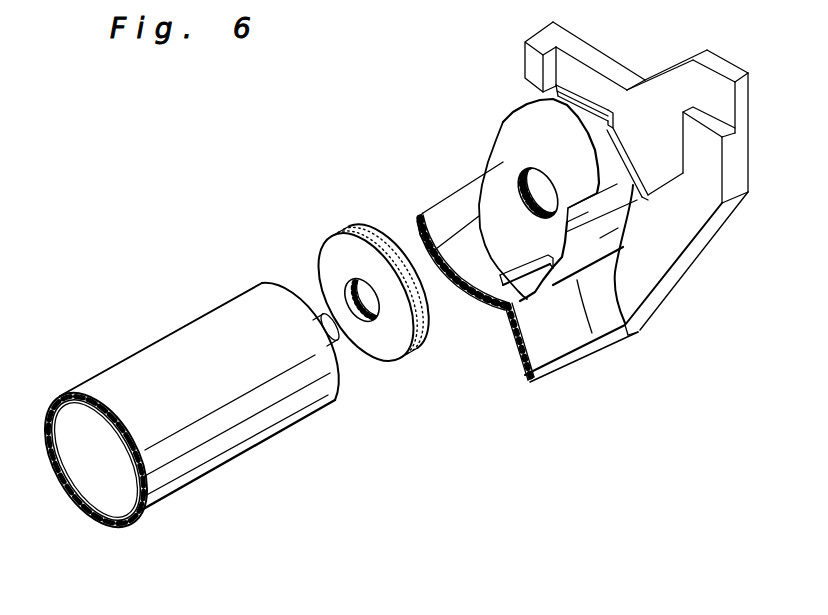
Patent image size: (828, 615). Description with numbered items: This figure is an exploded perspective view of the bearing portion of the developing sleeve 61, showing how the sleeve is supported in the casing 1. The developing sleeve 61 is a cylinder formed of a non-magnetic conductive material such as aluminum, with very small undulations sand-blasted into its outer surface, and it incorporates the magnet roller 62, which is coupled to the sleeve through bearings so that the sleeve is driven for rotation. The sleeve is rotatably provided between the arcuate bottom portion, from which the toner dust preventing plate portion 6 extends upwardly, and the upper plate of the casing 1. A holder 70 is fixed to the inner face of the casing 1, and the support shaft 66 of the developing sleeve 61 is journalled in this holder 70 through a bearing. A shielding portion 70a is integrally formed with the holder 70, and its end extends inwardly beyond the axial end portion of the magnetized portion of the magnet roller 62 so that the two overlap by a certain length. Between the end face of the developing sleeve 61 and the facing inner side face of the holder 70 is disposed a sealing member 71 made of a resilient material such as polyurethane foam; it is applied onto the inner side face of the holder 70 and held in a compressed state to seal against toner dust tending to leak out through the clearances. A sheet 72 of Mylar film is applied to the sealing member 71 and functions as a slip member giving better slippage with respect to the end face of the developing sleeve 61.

The casing 1 is at (636, 225).
The toner dust preventing plate portion 6 is at (466, 231).
The developing sleeve 61 is at (248, 430).
The magnet roller 62 is at (95, 492).
The support shaft 66 is at (273, 263).
The holder 70 is at (553, 215).
The shielding portion 70a is at (493, 356).
The sealing member 71 is at (380, 235).
The sheet 72 is at (354, 262).